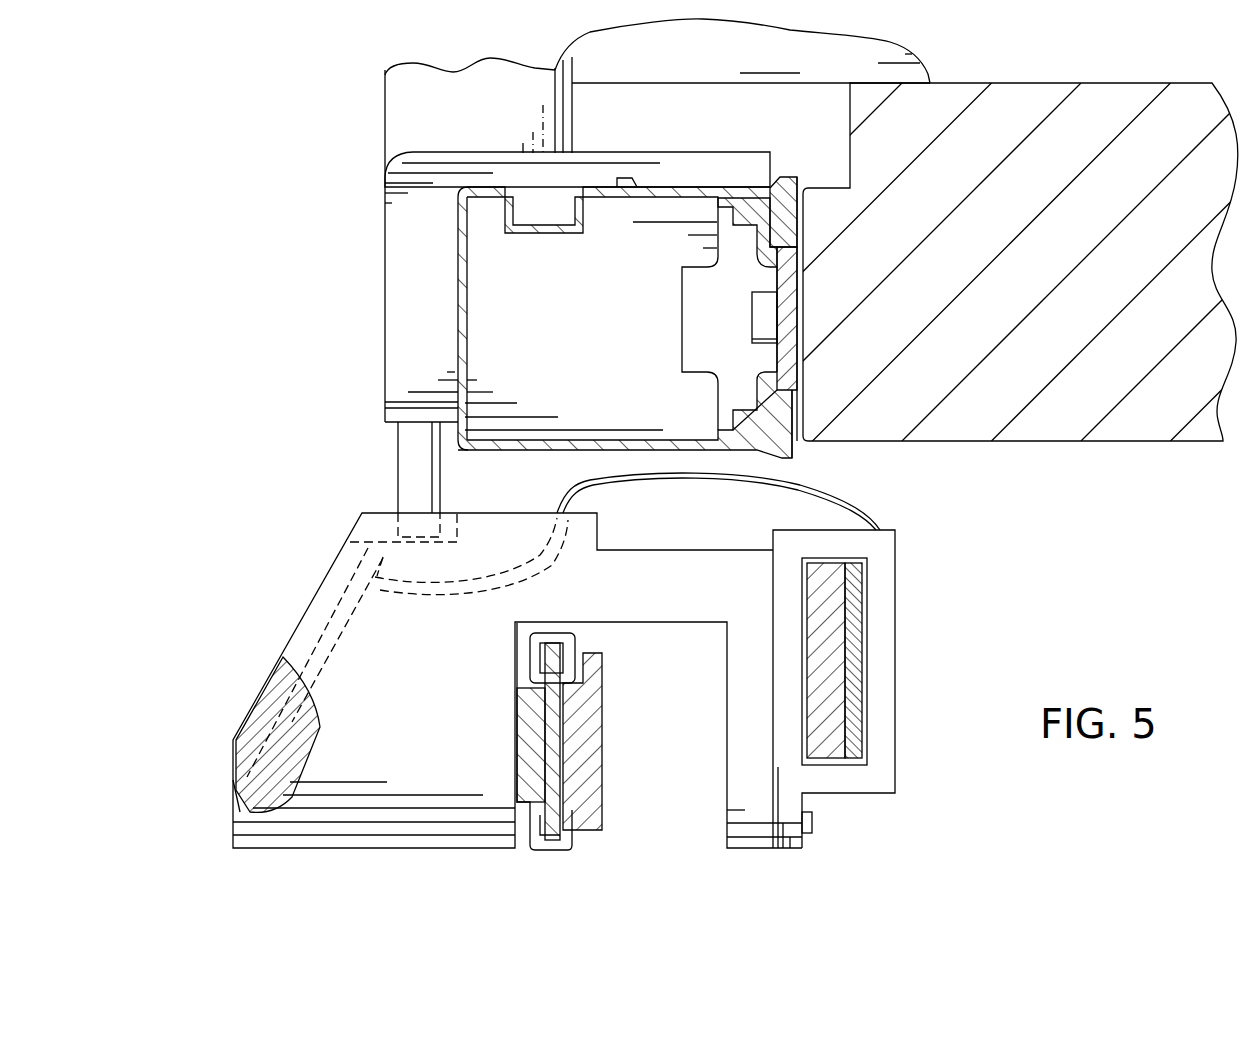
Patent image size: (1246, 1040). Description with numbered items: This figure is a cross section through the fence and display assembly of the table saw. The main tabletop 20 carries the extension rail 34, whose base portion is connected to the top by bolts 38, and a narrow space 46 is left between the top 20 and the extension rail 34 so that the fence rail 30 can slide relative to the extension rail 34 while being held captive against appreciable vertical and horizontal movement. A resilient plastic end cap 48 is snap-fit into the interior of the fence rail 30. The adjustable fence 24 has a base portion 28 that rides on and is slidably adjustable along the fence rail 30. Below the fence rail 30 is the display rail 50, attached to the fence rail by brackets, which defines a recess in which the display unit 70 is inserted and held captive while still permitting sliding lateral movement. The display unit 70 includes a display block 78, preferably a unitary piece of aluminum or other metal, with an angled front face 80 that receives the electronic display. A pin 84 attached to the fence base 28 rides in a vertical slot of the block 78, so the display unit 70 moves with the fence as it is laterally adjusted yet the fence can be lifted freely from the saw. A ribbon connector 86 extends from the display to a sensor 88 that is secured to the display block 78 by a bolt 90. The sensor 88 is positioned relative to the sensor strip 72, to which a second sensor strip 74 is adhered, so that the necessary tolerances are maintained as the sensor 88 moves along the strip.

The main tabletop 20 is at (1122, 83).
The adjustable fence 24 is at (773, 22).
The base portion 28 is at (420, 331).
The fence rail 30 is at (460, 250).
The extension rail 34 is at (776, 357).
The bolts 38 is at (752, 316).
The narrow space 46 is at (799, 190).
The end cap 48 is at (571, 338).
The display rail 50 is at (604, 714).
The display unit 70 is at (291, 598).
The sensor strip 72 is at (825, 652).
The sensor strip 74 is at (853, 715).
The display block 78 is at (424, 775).
The angled front face 80 is at (246, 704).
The pin 84 is at (410, 476).
The ribbon connector 86 is at (683, 480).
The sensor 88 is at (880, 609).
The bolt 90 is at (814, 822).